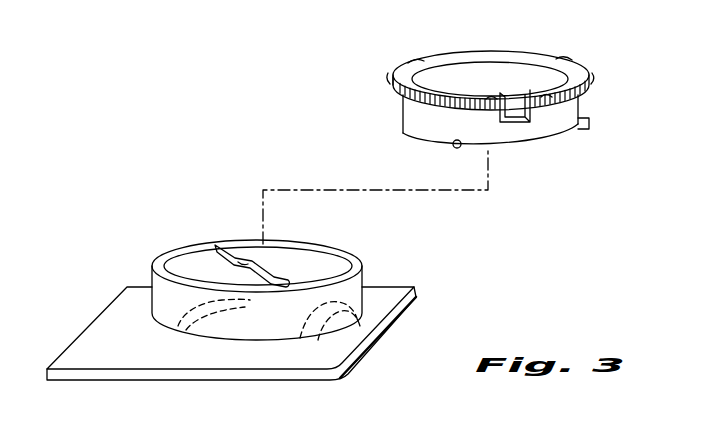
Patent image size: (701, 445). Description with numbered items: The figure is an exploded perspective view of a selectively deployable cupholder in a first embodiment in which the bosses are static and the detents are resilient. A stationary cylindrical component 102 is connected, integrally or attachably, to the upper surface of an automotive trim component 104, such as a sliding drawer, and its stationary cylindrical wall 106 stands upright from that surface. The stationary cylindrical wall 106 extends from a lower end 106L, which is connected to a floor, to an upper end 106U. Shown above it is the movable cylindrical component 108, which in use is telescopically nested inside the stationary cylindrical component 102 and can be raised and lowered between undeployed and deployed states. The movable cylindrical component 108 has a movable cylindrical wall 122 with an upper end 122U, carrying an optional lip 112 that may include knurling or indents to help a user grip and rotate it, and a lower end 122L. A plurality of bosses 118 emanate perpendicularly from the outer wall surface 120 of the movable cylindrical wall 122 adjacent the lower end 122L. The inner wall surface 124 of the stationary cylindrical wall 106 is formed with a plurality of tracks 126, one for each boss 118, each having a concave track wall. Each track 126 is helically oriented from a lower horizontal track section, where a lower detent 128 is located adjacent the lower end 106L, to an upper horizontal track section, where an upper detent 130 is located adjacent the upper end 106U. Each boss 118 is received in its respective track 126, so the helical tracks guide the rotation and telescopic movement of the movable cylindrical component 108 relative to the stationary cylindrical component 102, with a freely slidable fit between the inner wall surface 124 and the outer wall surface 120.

The stationary cylindrical component 102 is at (266, 284).
The automotive trim component 104 is at (350, 378).
The stationary cylindrical wall 106 is at (276, 297).
The upper end of the stationary cylindrical wall 106U is at (310, 235).
The lower end of the stationary cylindrical wall 106L is at (216, 343).
The movable cylindrical component 108 is at (491, 122).
The lip 112 is at (397, 92).
The bosses 118 is at (452, 146).
The outer wall surface 120 is at (525, 140).
The movable cylindrical wall 122 is at (460, 122).
The upper end of the movable cylindrical wall 122U is at (521, 95).
The lower end of the movable cylindrical wall 122L is at (552, 147).
The inner wall surface 124 is at (191, 267).
The tracks 126 is at (215, 306).
The lower detent 128 is at (290, 270).
The upper detent 130 is at (234, 272).